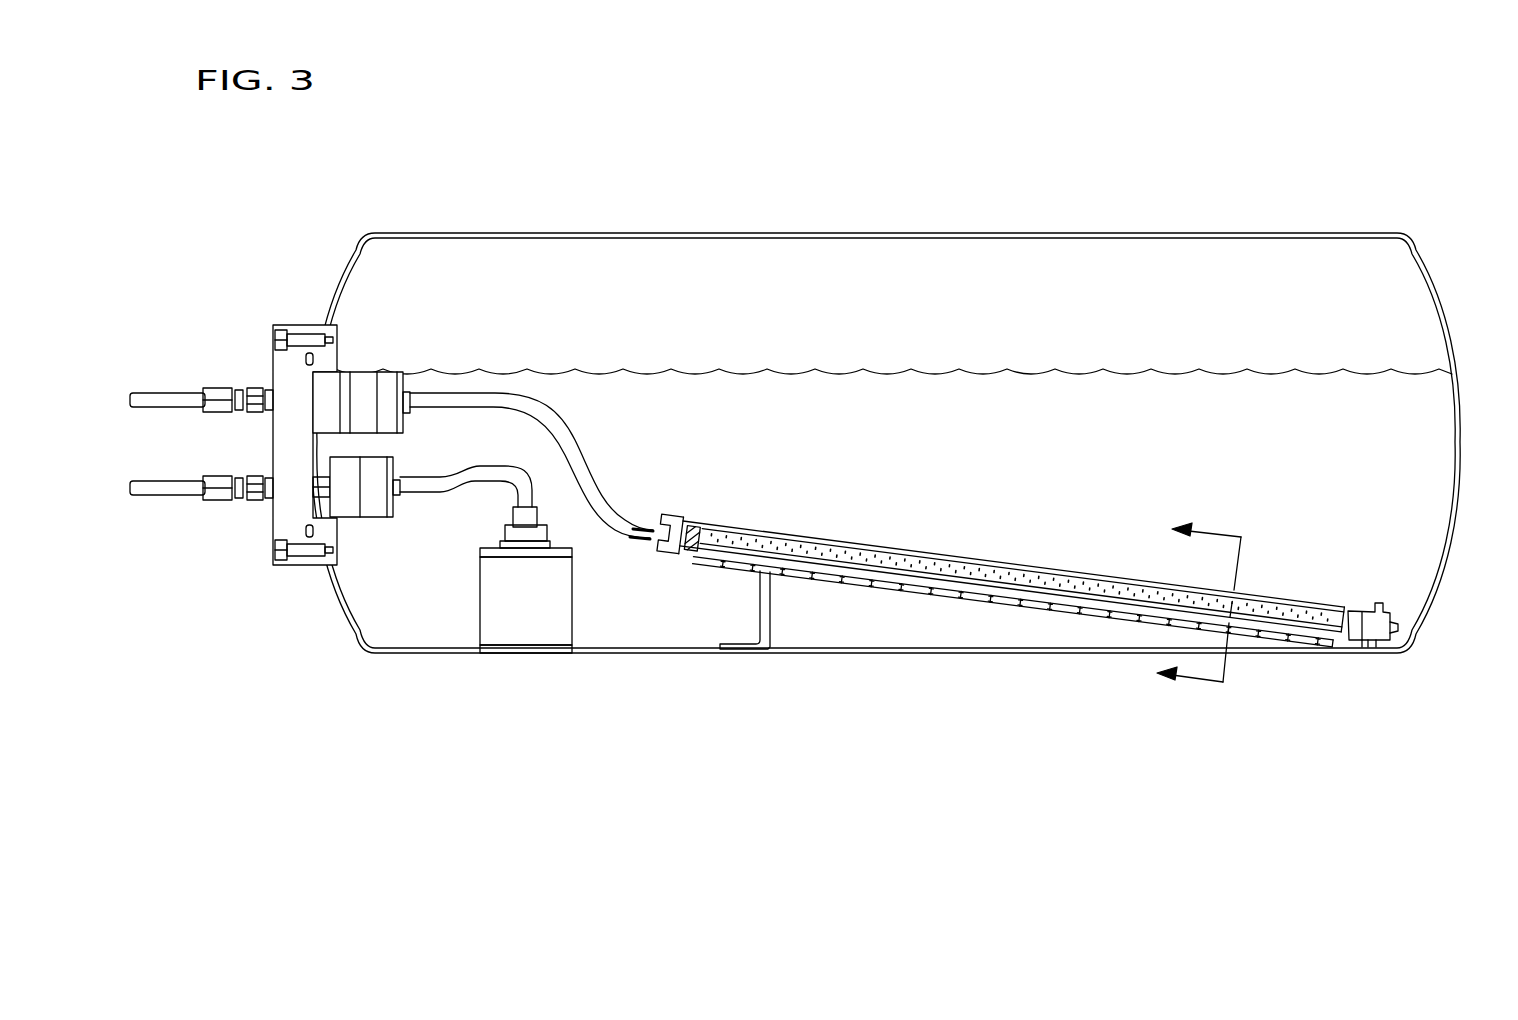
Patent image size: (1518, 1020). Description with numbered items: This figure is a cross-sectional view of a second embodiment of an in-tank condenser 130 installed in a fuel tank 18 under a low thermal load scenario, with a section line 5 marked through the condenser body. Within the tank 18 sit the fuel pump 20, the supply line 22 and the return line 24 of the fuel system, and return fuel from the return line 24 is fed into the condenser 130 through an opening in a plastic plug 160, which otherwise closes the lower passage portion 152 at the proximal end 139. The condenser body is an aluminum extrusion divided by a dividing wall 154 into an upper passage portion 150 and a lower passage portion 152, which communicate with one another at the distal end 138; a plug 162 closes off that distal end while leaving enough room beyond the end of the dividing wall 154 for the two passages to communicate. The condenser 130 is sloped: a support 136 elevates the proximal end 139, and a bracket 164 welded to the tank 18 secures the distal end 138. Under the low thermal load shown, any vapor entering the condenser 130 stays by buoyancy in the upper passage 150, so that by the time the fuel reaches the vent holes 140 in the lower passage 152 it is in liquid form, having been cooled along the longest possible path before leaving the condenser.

The tank 18 is at (1308, 225).
The return line 24 is at (218, 391).
The supply line 22 is at (218, 478).
The fuel pump 20 is at (483, 607).
The in-tank condenser 130 is at (973, 611).
The proximal end 139 is at (639, 565).
The plug 160 is at (736, 513).
The upper passage portion 150 is at (1016, 544).
The dividing wall 154 is at (1023, 547).
The lower passage portion 152 is at (1015, 636).
The vent holes 140 is at (1013, 661).
The support 136 is at (762, 612).
The plug 162 is at (1358, 620).
The bracket 164 is at (1390, 617).
The distal end 138 is at (1368, 647).
The section line 5- 5 is at (1199, 604).